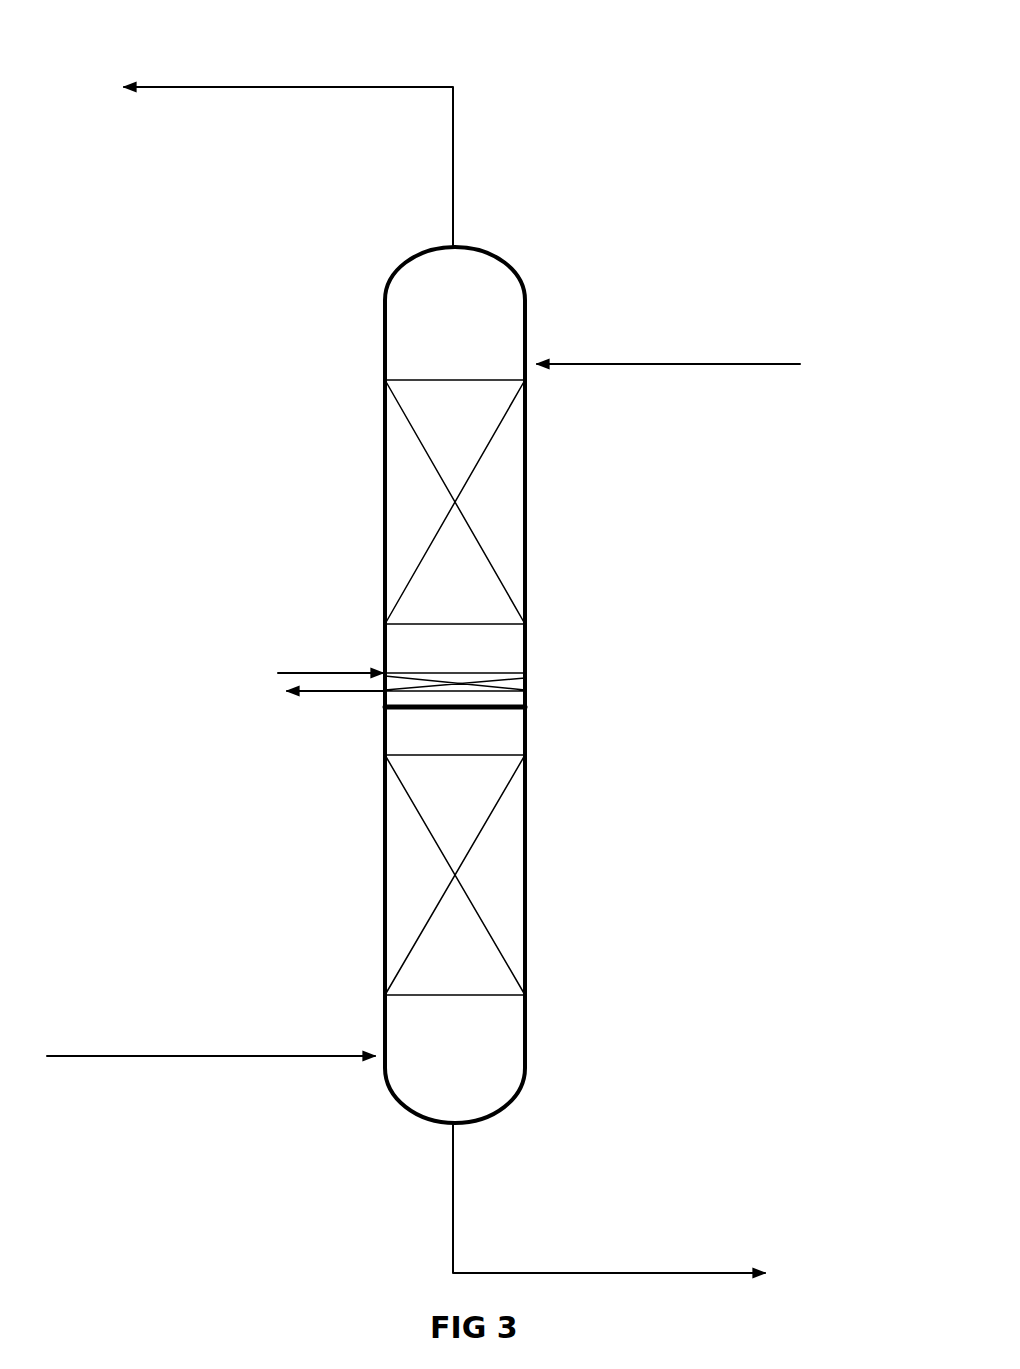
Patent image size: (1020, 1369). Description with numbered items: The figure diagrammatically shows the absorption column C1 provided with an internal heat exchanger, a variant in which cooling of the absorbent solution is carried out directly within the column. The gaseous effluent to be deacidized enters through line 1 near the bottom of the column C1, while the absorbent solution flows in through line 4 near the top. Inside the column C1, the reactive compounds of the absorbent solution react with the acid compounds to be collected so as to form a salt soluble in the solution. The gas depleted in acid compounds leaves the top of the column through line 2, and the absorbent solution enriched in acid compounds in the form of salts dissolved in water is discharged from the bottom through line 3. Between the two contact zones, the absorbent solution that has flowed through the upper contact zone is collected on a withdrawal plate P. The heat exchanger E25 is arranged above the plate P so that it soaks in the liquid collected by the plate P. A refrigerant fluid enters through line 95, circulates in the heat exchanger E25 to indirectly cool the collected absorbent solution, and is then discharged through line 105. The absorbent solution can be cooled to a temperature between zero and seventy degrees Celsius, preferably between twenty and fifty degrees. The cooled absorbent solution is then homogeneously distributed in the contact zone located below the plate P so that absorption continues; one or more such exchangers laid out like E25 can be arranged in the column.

The line 1 is at (188, 1056).
The line 2 is at (237, 87).
The line 3 is at (618, 1273).
The line 4 is at (603, 364).
The line 95 is at (350, 672).
The line 105 is at (300, 695).
The absorption column C1 is at (527, 672).
The heat exchanger E25 is at (442, 652).
The withdrawal plate P is at (471, 724).